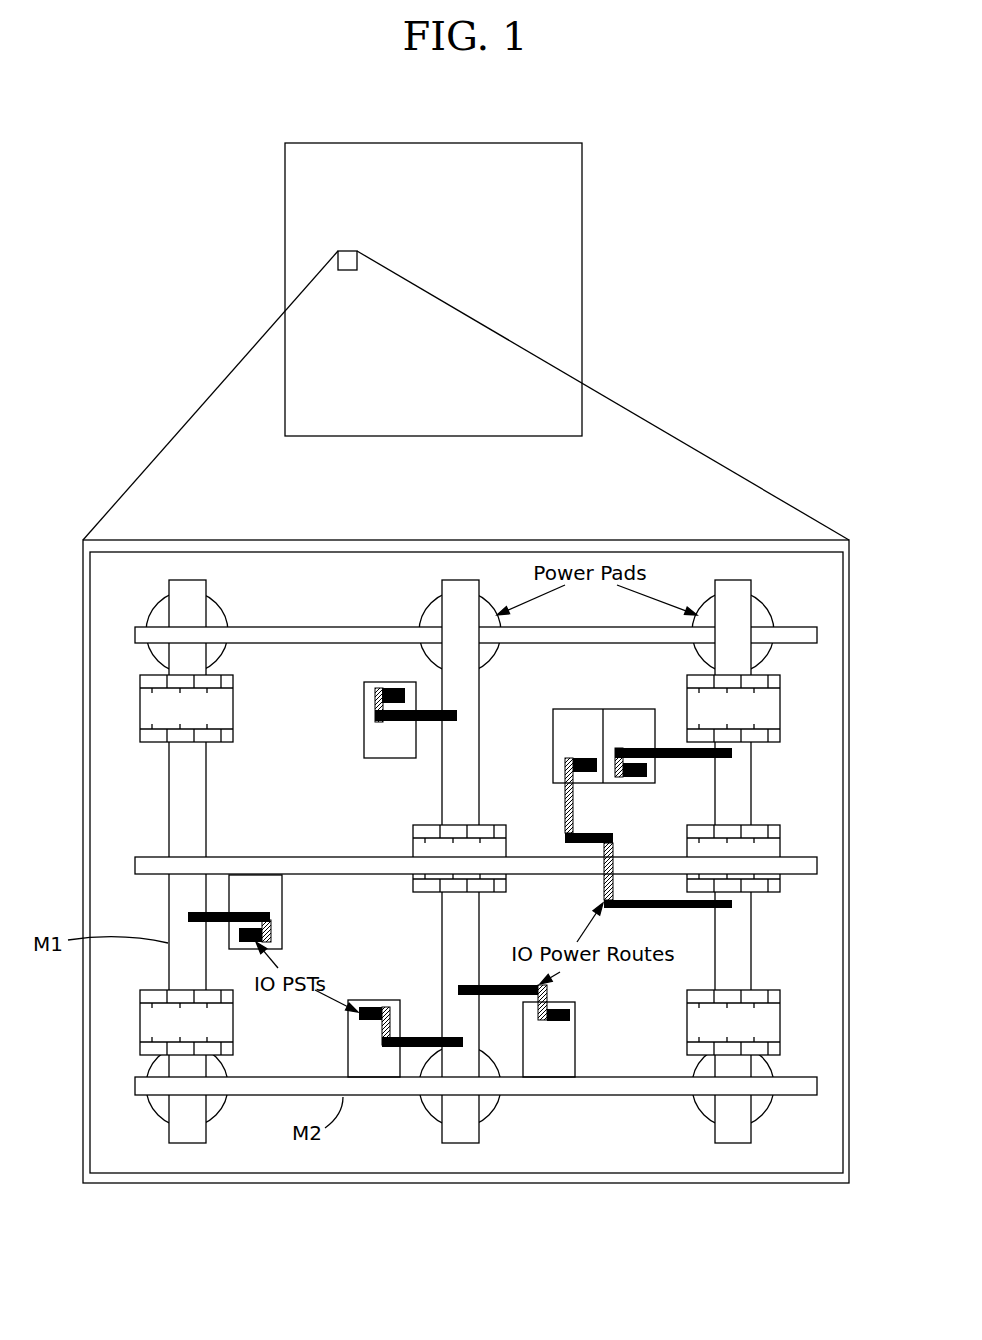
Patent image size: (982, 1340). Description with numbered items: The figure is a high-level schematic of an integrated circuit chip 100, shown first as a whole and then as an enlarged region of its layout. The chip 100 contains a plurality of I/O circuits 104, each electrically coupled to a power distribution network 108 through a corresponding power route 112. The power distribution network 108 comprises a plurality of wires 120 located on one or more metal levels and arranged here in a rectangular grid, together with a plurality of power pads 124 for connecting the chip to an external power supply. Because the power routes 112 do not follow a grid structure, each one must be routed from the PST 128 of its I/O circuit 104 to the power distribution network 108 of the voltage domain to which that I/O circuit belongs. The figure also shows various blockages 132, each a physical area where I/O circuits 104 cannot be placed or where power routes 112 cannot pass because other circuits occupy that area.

The integrated circuit chip 100 is at (590, 216).
The I/O circuits 104 is at (365, 708).
The power distribution network 108 is at (431, 854).
The power route 112 is at (432, 722).
The wires 120 is at (170, 593).
The power pads 124 is at (424, 612).
The PST 128 is at (402, 688).
The blockages 132 is at (139, 723).